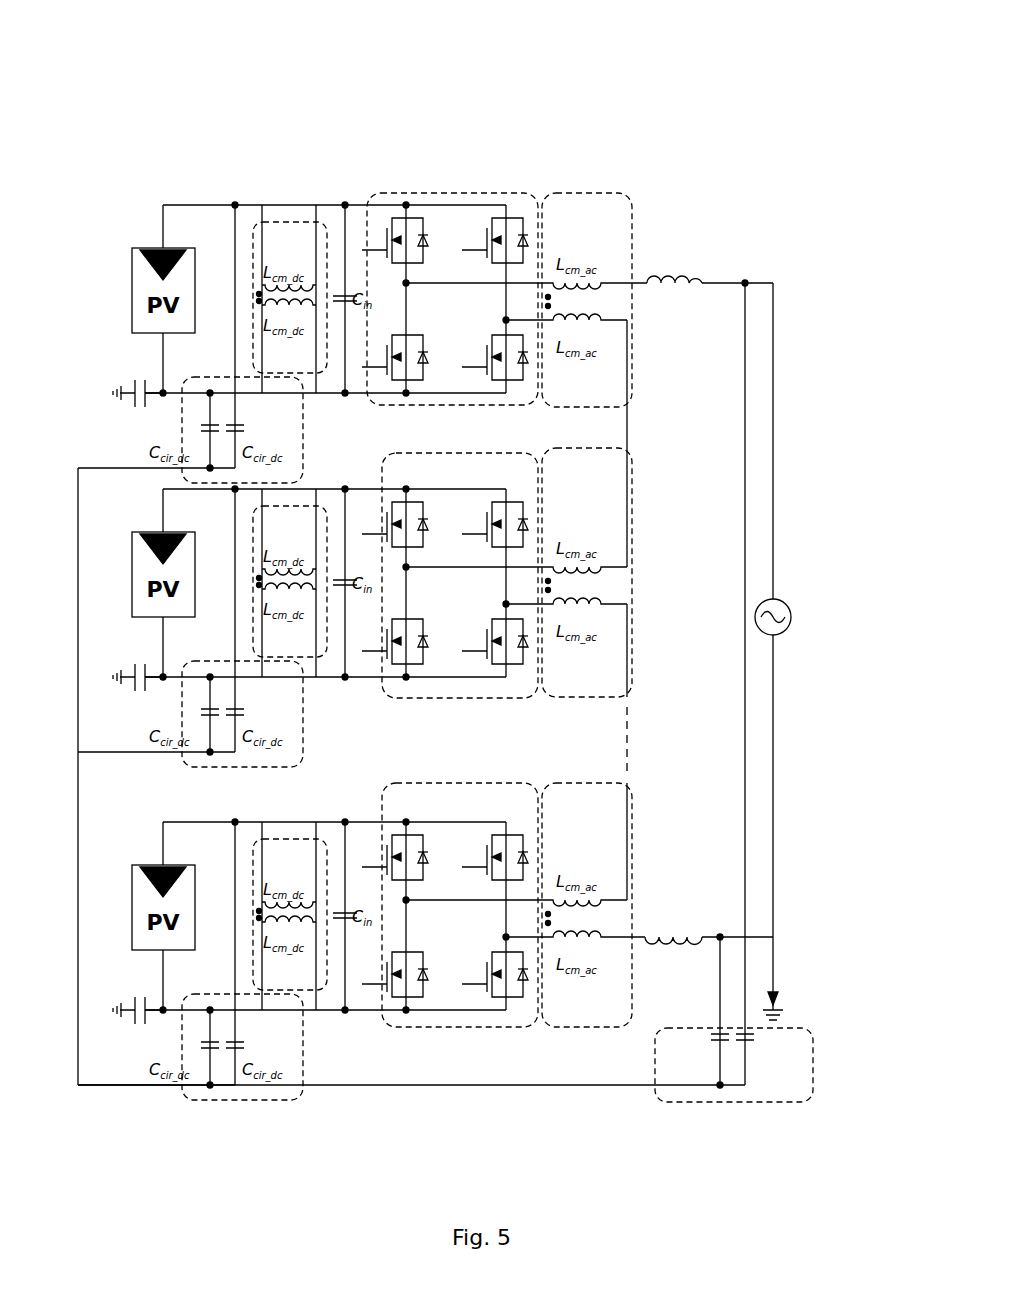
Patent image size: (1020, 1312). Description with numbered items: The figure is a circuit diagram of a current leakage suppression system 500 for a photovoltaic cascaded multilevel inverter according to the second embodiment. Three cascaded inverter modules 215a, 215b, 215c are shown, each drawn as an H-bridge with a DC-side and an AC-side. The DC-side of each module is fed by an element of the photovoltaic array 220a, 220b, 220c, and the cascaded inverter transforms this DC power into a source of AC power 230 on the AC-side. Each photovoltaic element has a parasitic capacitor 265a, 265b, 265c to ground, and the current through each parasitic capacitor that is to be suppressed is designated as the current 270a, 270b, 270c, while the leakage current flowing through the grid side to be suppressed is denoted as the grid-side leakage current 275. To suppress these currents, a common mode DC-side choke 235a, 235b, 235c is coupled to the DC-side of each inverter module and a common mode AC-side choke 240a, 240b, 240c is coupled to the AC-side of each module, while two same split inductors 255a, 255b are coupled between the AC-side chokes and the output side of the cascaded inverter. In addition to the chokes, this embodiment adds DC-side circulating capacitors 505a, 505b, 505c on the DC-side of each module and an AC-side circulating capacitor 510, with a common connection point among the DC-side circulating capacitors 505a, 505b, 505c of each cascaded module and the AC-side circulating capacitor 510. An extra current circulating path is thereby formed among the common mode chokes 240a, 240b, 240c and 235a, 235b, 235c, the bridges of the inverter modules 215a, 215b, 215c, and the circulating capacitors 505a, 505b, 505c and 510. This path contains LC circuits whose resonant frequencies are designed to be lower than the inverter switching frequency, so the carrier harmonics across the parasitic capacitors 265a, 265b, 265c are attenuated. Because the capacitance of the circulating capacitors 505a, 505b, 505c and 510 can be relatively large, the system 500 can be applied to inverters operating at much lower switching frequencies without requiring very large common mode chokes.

The current leakage suppression system 500 is at (606, 99).
The inverter module 215a is at (428, 191).
The inverter module 215b is at (456, 595).
The inverter module 215c is at (456, 924).
The photovoltaic array element 220a is at (126, 276).
The photovoltaic array element 220b is at (139, 583).
The photovoltaic array element 220c is at (141, 916).
The source of AC power 230 is at (796, 607).
The common mode DC-side choke 235a is at (281, 220).
The common mode DC-side choke 235b is at (328, 608).
The common mode DC-side choke 235c is at (321, 932).
The common mode AC-side choke 240a is at (589, 191).
The common mode AC-side choke 240b is at (586, 602).
The common mode AC-side choke 240c is at (593, 927).
The split inductor 255a is at (714, 275).
The split inductor 255b is at (686, 932).
The parasitic capacitor 265a is at (107, 376).
The parasitic capacitor 265b is at (94, 644).
The parasitic capacitor 265c is at (90, 976).
The current through the parasitic capacitor 270a is at (120, 426).
The current through the parasitic capacitor 270b is at (95, 715).
The current through the parasitic capacitor 270c is at (98, 1066).
The grid-side leakage current 275 is at (830, 966).
The DC-side circulating capacitor 505a is at (307, 420).
The DC-side circulating capacitor 505b is at (236, 488).
The DC-side circulating capacitor 505c is at (196, 985).
The AC-side circulating capacitor 510 is at (748, 1108).